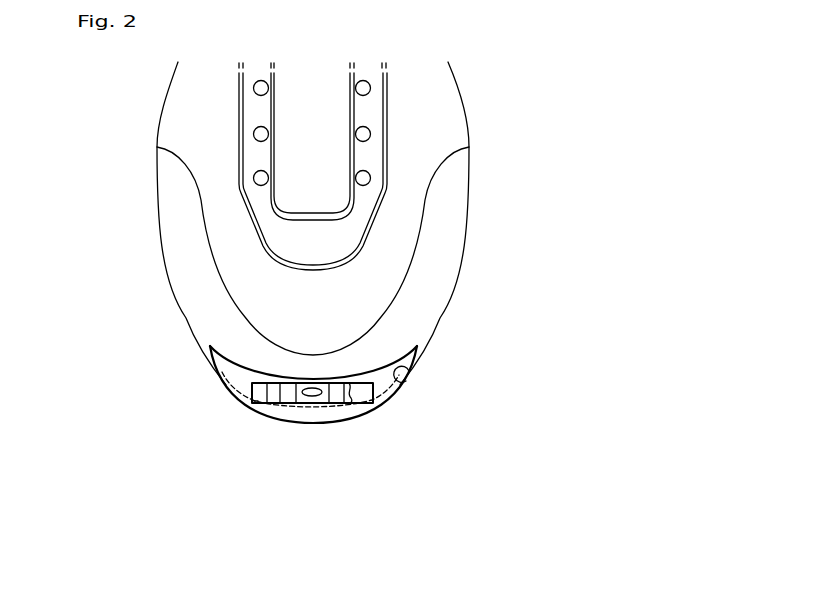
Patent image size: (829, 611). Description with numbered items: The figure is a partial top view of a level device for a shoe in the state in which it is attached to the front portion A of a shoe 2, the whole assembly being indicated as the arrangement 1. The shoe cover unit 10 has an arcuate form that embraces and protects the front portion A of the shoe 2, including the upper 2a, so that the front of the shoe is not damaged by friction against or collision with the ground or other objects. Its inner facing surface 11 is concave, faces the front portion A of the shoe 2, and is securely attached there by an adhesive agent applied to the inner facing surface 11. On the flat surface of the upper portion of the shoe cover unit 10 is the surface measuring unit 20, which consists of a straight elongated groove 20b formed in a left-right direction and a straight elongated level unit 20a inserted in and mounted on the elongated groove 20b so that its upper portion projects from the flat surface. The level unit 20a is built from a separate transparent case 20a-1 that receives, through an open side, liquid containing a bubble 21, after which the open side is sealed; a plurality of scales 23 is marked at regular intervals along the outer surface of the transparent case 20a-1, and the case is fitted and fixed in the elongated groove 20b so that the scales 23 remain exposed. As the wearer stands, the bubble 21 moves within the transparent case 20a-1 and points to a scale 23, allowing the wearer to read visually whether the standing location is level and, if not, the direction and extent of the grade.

The heel device / insert 1 is at (293, 426).
The shoe 2 is at (475, 211).
The upper 2a is at (443, 277).
The shoe cover unit 10 is at (401, 401).
The inner facing surface 11 is at (409, 370).
The surface measuring unit 20 is at (232, 421).
The level unit 20a is at (142, 358).
The transparent case 20a-1 is at (263, 402).
The elongated groove 20b is at (364, 396).
The bubble 21 is at (311, 388).
The scales 23 is at (272, 398).
The front portion A is at (302, 408).